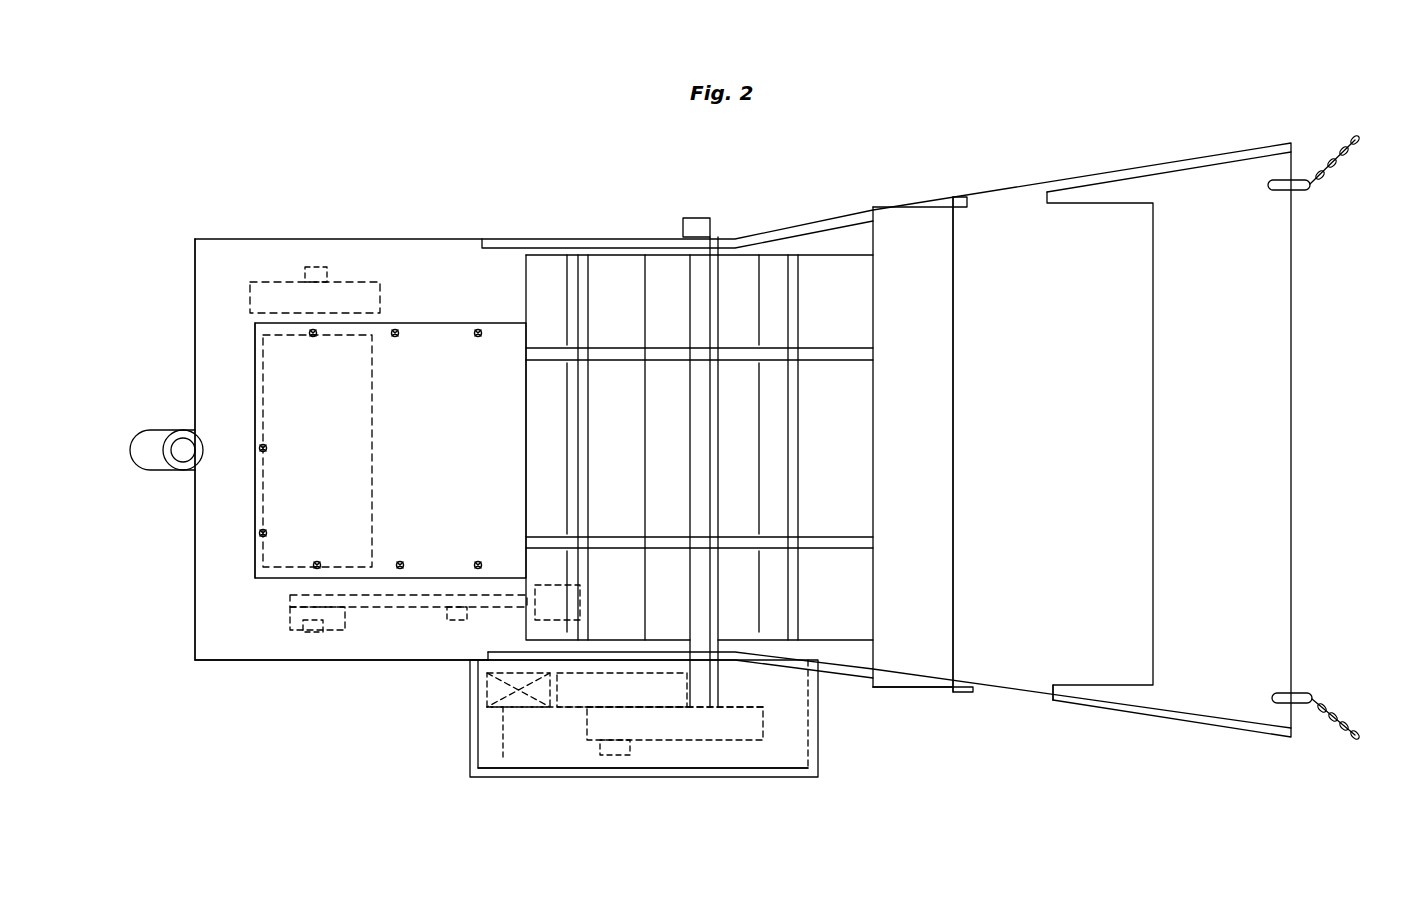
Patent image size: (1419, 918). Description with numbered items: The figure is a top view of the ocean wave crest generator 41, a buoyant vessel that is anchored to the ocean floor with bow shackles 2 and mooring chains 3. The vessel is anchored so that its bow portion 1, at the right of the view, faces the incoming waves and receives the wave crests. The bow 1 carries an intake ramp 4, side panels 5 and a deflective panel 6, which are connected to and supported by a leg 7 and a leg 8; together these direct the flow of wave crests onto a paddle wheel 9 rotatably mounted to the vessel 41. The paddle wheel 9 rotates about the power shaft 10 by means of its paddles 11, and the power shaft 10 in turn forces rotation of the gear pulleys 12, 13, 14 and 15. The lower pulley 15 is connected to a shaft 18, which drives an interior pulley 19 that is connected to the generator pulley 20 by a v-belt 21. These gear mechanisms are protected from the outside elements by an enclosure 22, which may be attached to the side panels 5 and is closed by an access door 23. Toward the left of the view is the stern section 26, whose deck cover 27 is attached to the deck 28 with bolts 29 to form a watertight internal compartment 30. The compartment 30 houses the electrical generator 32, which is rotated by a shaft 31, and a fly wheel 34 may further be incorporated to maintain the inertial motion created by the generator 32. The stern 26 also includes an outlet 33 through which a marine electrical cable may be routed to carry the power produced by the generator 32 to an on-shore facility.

The bow portion 1 is at (1316, 437).
The bow shackles 2 is at (1312, 192).
The mooring chains 3 is at (1330, 745).
The intake ramp 4 is at (1213, 483).
The side panels 5 is at (548, 244).
The deflective panel 6 is at (1053, 292).
The leg 7 is at (1013, 700).
The leg 8 is at (920, 690).
The paddle wheel 9 is at (635, 350).
The power shaft 10 is at (693, 218).
The paddles 11 is at (843, 295).
The gear pulley 12 is at (708, 722).
The gear pulley 13 is at (637, 687).
The gear pulley 14 is at (600, 738).
The lower pulley 15 is at (517, 693).
The shaft 18 is at (517, 712).
The interior pulley 19 is at (463, 623).
The generator pulley 20 is at (300, 630).
The v-belt 21 is at (400, 608).
The enclosure 22 is at (818, 737).
The access door 23 is at (742, 770).
The stern section 26 is at (186, 350).
The deck cover 27 is at (253, 530).
The deck 28 is at (230, 463).
The bolts 29 is at (478, 333).
The internal compartment 30 is at (240, 612).
The shaft 31 is at (307, 268).
The electrical generator 32 is at (315, 448).
The outlet 33 is at (160, 465).
The fly wheel 34 is at (323, 298).
The ocean wave crest generator 41 is at (497, 142).